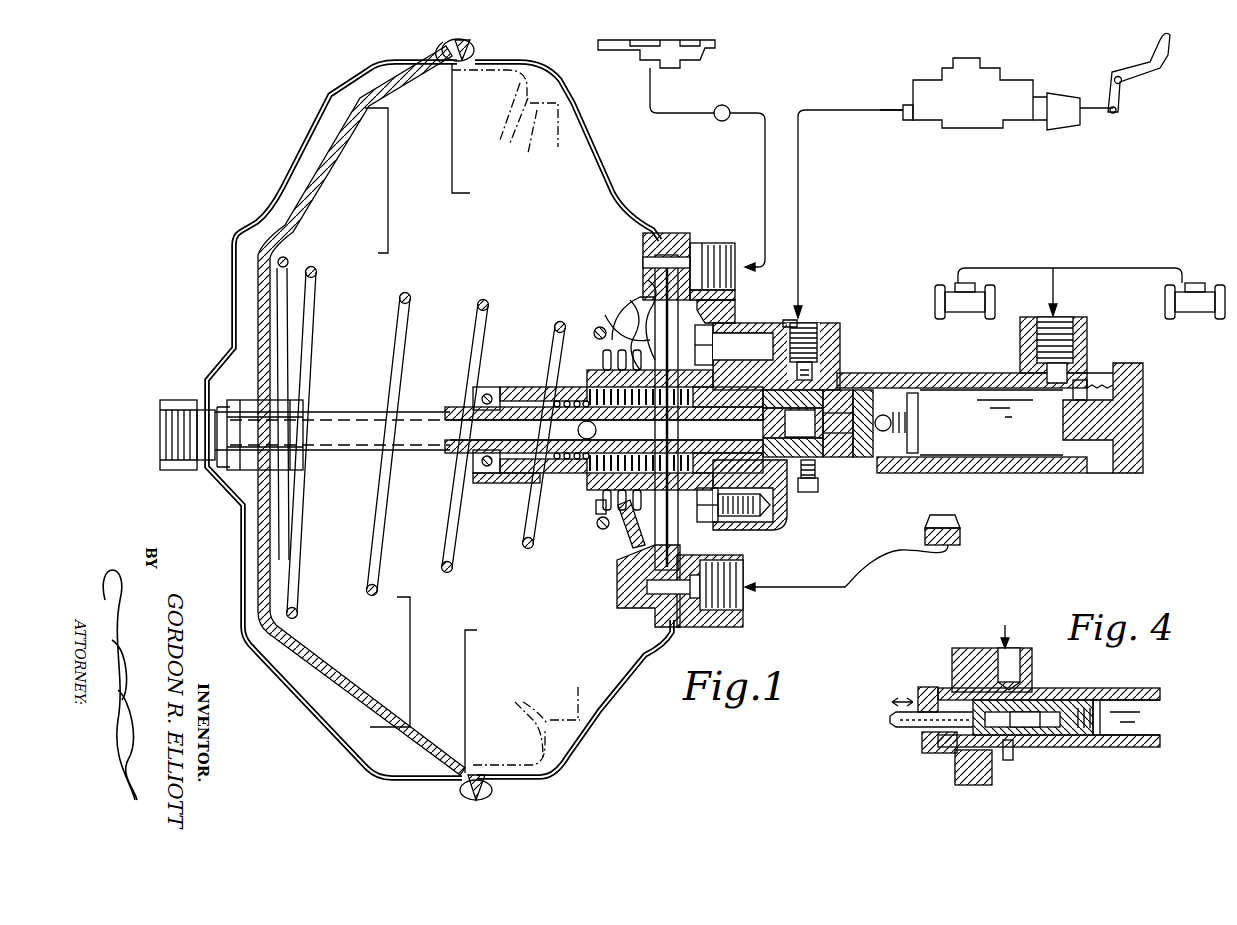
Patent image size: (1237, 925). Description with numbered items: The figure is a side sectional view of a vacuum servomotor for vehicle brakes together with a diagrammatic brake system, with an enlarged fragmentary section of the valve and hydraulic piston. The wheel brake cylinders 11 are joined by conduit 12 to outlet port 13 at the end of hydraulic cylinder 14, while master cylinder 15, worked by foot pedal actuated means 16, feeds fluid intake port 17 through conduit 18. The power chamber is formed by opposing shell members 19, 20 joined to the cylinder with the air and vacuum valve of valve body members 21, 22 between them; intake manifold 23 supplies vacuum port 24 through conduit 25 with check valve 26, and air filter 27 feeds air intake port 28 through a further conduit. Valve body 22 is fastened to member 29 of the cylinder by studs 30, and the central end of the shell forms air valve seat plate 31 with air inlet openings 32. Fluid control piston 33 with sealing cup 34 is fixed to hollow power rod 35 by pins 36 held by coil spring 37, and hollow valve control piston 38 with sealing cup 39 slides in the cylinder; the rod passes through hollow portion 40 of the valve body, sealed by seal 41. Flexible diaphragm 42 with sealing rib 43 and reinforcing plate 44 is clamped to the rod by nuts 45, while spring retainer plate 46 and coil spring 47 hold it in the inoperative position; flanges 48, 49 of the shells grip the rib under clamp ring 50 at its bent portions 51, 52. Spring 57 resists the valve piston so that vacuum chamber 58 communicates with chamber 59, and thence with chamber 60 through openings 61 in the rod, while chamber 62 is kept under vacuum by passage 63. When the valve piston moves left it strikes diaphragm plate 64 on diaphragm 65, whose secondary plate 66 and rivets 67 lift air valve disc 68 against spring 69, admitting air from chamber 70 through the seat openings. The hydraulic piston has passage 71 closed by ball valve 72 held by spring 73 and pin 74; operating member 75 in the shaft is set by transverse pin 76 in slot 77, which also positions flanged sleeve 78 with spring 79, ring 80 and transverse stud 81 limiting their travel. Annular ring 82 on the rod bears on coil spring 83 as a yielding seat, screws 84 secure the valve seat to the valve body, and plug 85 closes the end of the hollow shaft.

In FIG. 1, the vehicle brake wheel cylinders 11 is at (960, 305).
In FIG. 1, the conduit 12 is at (1022, 268).
In FIG. 1, the outlet port 13 is at (1075, 330).
In FIG. 1, the hydraulic cylinder 14 is at (887, 375).
In FIG. 4, the hydraulic cylinder 14 is at (1150, 688).
In FIG. 1, the master cylinder 15 is at (977, 113).
In FIG. 1, the foot pedal actuated means 16 is at (1145, 72).
In FIG. 1, the fluid intake port 17 is at (830, 373).
In FIG. 4, the fluid intake port 17 is at (1007, 650).
In FIG. 1, the conduit 18 is at (800, 235).
In FIG. 1, the shell member 19 is at (312, 130).
In FIG. 1, the shell member 20 is at (617, 187).
In FIG. 1, the valve body member 21 is at (622, 300).
In FIG. 1, the valve body member 22 is at (675, 237).
In FIG. 1, the vehicle intake manifold 23 is at (687, 58).
In FIG. 1, the vacuum port 24 is at (737, 280).
In FIG. 1, the conduit 25 is at (768, 118).
In FIG. 1, the check valve 26 is at (730, 108).
In FIG. 1, the air filter 27 is at (945, 548).
In FIG. 1, the valve air intake port 28 is at (733, 572).
In FIG. 1, the member 29 is at (780, 493).
In FIG. 4, the member 29 is at (957, 782).
In FIG. 1, the studs 30 is at (680, 523).
In FIG. 1, the valve air seat plate 31 is at (645, 283).
In FIG. 1, the air inlet openings 32 is at (633, 513).
In FIG. 1, the fluid control piston 33 is at (867, 393).
In FIG. 4, the fluid control piston 33 is at (1080, 697).
In FIG. 1, the sealing cup 34 is at (920, 377).
In FIG. 1, the hollow power rod 35 is at (350, 450).
In FIG. 4, the hollow power rod 35 is at (910, 723).
In FIG. 1, the pins 36 is at (835, 405).
In FIG. 1, the coil spring 37 is at (853, 453).
In FIG. 1, the hollow valve control piston 38 is at (790, 322).
In FIG. 4, the hollow valve control piston 38 is at (937, 688).
In FIG. 1, the sealing cup 39 is at (805, 478).
In FIG. 4, the sealing cup 39 is at (957, 750).
In FIG. 1, the elongated hollow portion 40 is at (503, 483).
In FIG. 1, the seal 41 is at (490, 387).
In FIG. 1, the flexible diaphragm 42 is at (313, 177).
In FIG. 1, the outer annular sealing rib 43 is at (478, 45).
In FIG. 1, the hollow annular plate 44 is at (300, 222).
In FIG. 1, the threaded nuts 45 is at (227, 407).
In FIG. 1, the circular spring retainer plate 46 is at (287, 257).
In FIG. 1, the coil spring 47 is at (480, 330).
In FIG. 1, the annular flange 48 is at (440, 786).
In FIG. 1, the annular flange 49 is at (500, 787).
In FIG. 1, the clamp ring 50 is at (440, 45).
In FIG. 1, the bent portion 51 is at (447, 807).
In FIG. 1, the bent portion 52 is at (490, 805).
In FIG. 1, the spring 57 is at (595, 390).
In FIG. 1, the vacuum chamber 58 is at (705, 314).
In FIG. 1, the chamber 59 is at (668, 410).
In FIG. 1, the chamber 60 is at (353, 90).
In FIG. 1, the openings 61 is at (598, 430).
In FIG. 1, the chamber 62 is at (563, 193).
In FIG. 1, the passage 63 is at (707, 300).
In FIG. 1, the diaphragm plate 64 is at (692, 623).
In FIG. 1, the flexible diaphragm 65 is at (612, 313).
In FIG. 1, the secondary diaphragm plate 66 is at (627, 563).
In FIG. 1, the rivet 67 is at (600, 332).
In FIG. 1, the air valve disc 68 is at (615, 505).
In FIG. 1, the coiled spring 69 is at (605, 497).
In FIG. 1, the chamber 70 is at (600, 526).
In FIG. 1, the passage 71 is at (873, 457).
In FIG. 1, the ball valve 72 is at (913, 397).
In FIG. 4, the ball valve 72 is at (1100, 707).
In FIG. 1, the spring 73 is at (920, 420).
In FIG. 4, the spring 73 is at (1107, 710).
In FIG. 1, the pin 74 is at (913, 447).
In FIG. 4, the pin 74 is at (1100, 730).
In FIG. 1, the ball valve operating member 75 is at (867, 450).
In FIG. 4, the ball valve operating member 75 is at (1040, 740).
In FIG. 1, the transverse pin 76 is at (793, 421).
In FIG. 4, the transverse pin 76 is at (1025, 717).
In FIG. 1, the slot 77 is at (800, 428).
In FIG. 1, the flanged sleeve member 78 is at (820, 392).
In FIG. 4, the flanged sleeve member 78 is at (1047, 697).
In FIG. 1, the coiled spring 79 is at (820, 457).
In FIG. 1, the ring 80 is at (803, 330).
In FIG. 4, the ring 80 is at (1017, 700).
In FIG. 1, the transverse stud 81 is at (818, 477).
In FIG. 4, the transverse stud 81 is at (1015, 755).
In FIG. 1, the annular ring 82 is at (573, 420).
In FIG. 1, the coil spring 83 is at (560, 400).
In FIG. 1, the screws 84 is at (590, 470).
In FIG. 1, the plug 85 is at (763, 423).